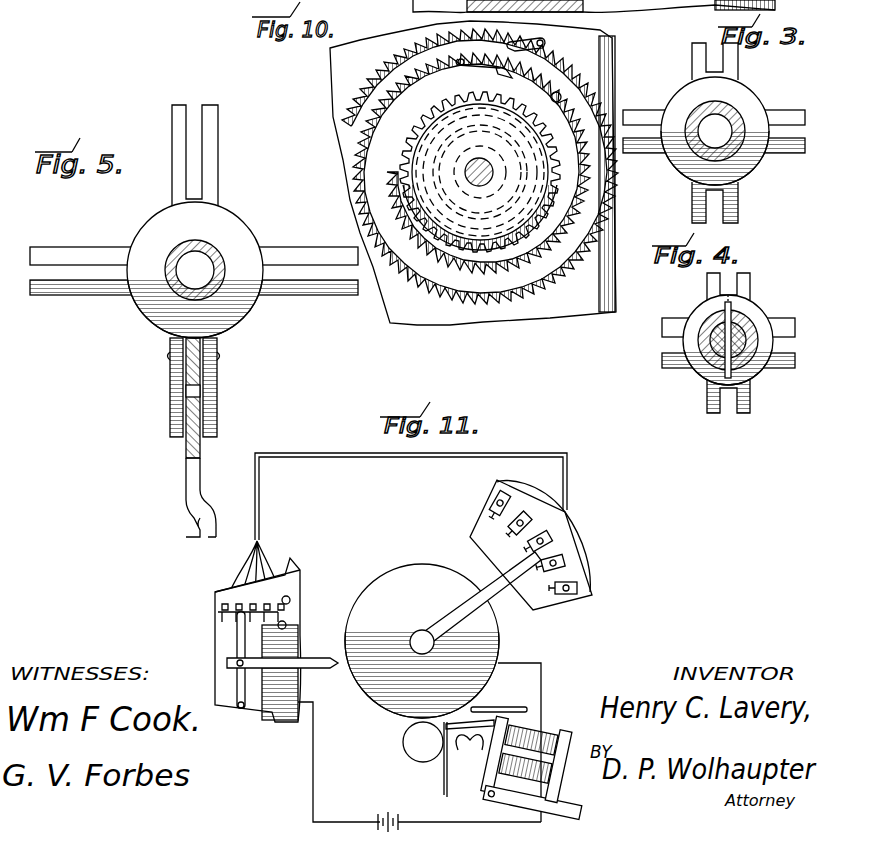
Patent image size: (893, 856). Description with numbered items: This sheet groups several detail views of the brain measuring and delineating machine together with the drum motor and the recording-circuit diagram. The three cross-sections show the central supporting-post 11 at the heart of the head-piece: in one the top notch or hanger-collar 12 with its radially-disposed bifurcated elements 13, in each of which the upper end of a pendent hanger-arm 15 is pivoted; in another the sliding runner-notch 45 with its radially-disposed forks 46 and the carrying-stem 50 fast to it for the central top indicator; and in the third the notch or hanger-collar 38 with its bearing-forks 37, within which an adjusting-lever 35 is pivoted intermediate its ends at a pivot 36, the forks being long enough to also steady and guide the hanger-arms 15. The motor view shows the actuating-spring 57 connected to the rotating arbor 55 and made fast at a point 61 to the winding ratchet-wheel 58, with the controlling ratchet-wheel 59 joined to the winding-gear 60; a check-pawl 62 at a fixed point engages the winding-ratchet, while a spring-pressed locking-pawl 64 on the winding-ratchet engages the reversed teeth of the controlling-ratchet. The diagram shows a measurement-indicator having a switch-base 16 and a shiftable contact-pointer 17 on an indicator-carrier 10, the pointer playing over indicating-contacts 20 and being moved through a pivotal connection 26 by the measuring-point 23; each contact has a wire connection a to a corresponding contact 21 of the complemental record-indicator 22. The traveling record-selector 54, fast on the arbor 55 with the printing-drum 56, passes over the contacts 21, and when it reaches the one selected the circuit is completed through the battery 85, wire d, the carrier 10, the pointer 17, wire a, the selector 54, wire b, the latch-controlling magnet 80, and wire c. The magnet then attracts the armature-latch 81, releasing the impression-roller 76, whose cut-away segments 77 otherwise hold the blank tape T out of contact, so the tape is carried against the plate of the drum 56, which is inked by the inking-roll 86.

In FIG. 11, the indicator-carrier 10 is at (303, 572).
In FIG. 5, the central supporting-post 11 is at (212, 256).
In FIG. 3, the central supporting-post 11 is at (693, 103).
In FIG. 4, the central supporting-post 11 is at (708, 320).
In FIG. 3, the top notch or hanger-collar 12 is at (762, 103).
In FIG. 3, the bifurcated element 13 is at (640, 112).
In FIG. 5, the hanger-arm 15 is at (186, 456).
In FIG. 11, the switch-base 16 is at (226, 592).
In FIG. 11, the contact-pointer 17 is at (237, 645).
In FIG. 11, the indicating-contact 20 is at (214, 617).
In FIG. 11, the indicating-contact of record-indicator 21 is at (542, 559).
In FIG. 11, the individual record-indicator 22 is at (590, 590).
In FIG. 11, the measuring-point 23 is at (310, 658).
In FIG. 11, the pivotal connection 26 is at (228, 667).
In FIG. 5, the adjusting-lever 35 is at (192, 380).
In FIG. 5, the pivot of adjusting-lever 36 is at (218, 362).
In FIG. 5, the bearing-fork 37 is at (172, 131).
In FIG. 5, the notch or hanger-collar 38 is at (160, 216).
In FIG. 4, the sliding runner-notch 45 is at (700, 376).
In FIG. 4, the radially-disposed fork of runner-notch 46 is at (750, 288).
In FIG. 4, the carrying-stem 50 is at (756, 322).
In FIG. 11, the traveling record-selector 54 is at (500, 572).
In FIG. 10, the rotating arbor 55 is at (493, 174).
In FIG. 11, the measurement-recorder (printing-drum) 56 is at (414, 568).
In FIG. 10, the actuating-spring 57 is at (405, 66).
In FIG. 10, the winding ratchet-wheel 58 is at (466, 172).
In FIG. 10, the controlling ratchet-wheel 59 is at (400, 150).
In FIG. 10, the winding-gear 60 is at (480, 177).
In FIG. 10, the spring fastening 61 is at (560, 93).
In FIG. 10, the check-pawl 62 is at (548, 30).
In FIG. 10, the locking-pawl 64 is at (512, 72).
In FIG. 11, the impression-roller 76 is at (494, 774).
In FIG. 11, the cut-away segment 77 is at (470, 744).
In FIG. 11, the latch-controlling magnet 80 is at (521, 763).
In FIG. 11, the armature-latch 81 is at (526, 802).
In FIG. 11, the battery 85 is at (402, 800).
In FIG. 11, the inking-roll 86 is at (410, 736).
In FIG. 11, the wire connection a is at (580, 512).
In FIG. 11, the circuit-wire b is at (541, 680).
In FIG. 11, the circuit-wire c is at (541, 812).
In FIG. 11, the wire connection d is at (313, 762).
In FIG. 11, the blank tape T is at (445, 782).